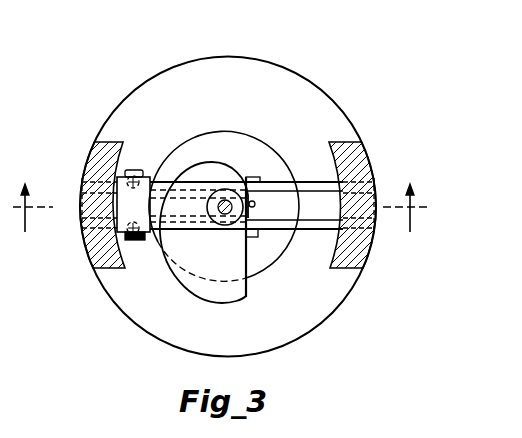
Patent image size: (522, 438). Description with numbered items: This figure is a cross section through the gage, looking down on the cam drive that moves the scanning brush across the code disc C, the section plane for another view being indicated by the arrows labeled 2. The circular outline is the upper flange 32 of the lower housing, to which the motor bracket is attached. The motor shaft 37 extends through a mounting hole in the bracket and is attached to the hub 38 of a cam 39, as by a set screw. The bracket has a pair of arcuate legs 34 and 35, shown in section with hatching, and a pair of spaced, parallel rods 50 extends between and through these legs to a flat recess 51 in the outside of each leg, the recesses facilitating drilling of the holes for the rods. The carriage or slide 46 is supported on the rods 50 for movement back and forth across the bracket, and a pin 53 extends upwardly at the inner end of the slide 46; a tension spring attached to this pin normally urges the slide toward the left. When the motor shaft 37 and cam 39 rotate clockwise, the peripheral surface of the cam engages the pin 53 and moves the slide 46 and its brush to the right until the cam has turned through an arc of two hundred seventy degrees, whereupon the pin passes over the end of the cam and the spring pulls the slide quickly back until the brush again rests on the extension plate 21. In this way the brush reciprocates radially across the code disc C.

The upper flange 32 is at (336, 106).
The code disc C is at (248, 134).
The motor shaft 37 is at (222, 216).
The hub 38 is at (207, 205).
The cam 39 is at (237, 295).
The rods 50 is at (317, 182).
The pin 53 is at (256, 204).
The slide 46 is at (251, 177).
The extension plate 21 is at (138, 170).
The arcuate leg 34 is at (94, 152).
The arcuate leg 35 is at (364, 157).
The flat recess 51 is at (80, 194).
The section line 2- 2 is at (220, 221).